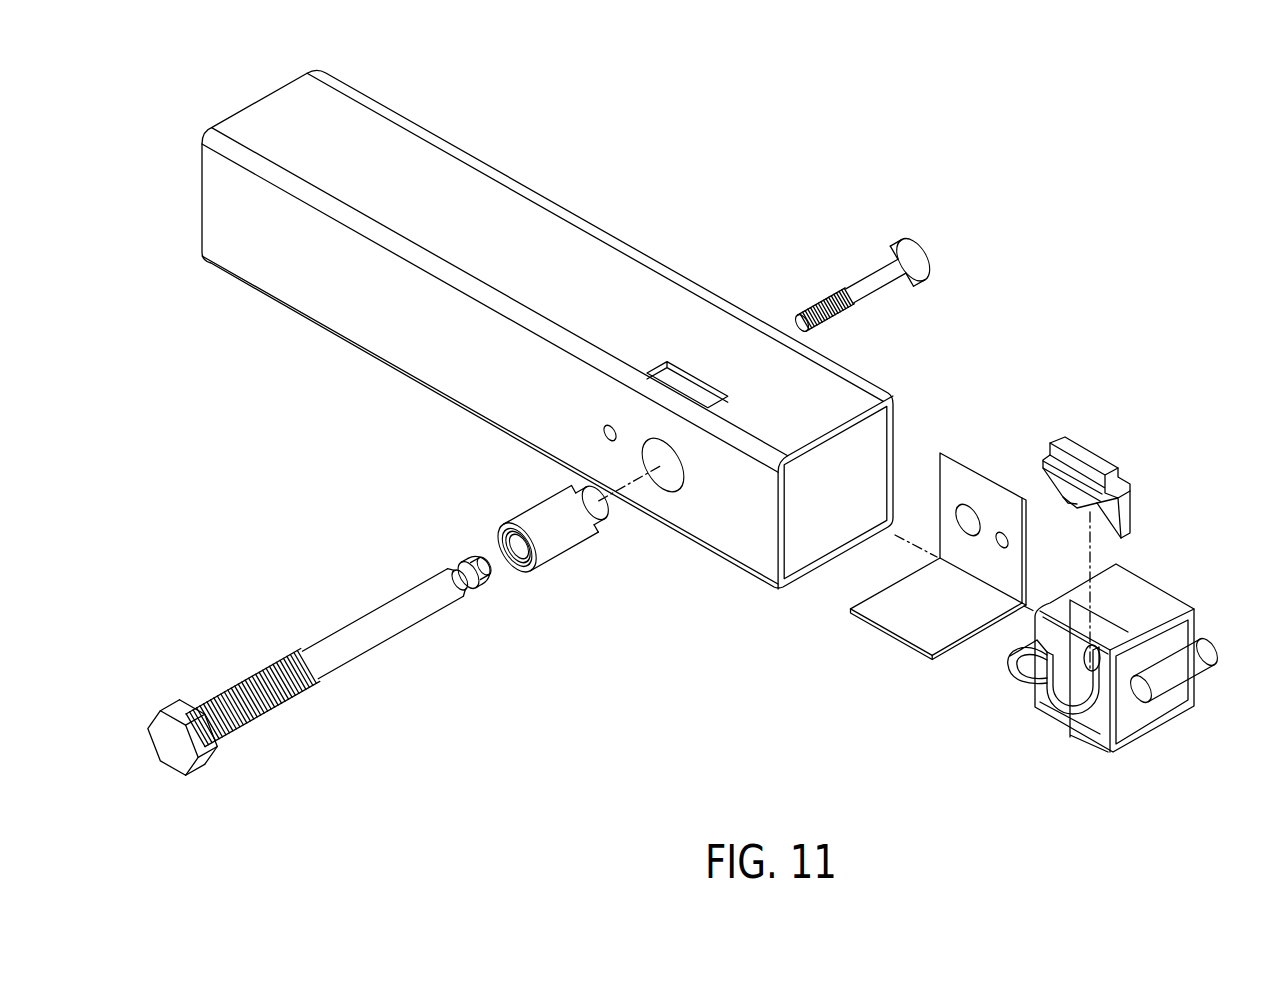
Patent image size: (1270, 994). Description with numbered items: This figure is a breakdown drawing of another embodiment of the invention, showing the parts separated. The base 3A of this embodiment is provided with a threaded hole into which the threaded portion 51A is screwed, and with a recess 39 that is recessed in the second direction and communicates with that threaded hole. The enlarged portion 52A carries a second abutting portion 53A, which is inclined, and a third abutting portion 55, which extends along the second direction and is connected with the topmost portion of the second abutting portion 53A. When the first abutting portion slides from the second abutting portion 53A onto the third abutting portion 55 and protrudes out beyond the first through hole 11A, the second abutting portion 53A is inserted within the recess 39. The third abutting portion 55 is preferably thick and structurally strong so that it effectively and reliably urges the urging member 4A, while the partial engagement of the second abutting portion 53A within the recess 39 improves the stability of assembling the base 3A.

The first through hole 11A is at (690, 362).
The urging member 4A is at (1128, 450).
The base 3A is at (1040, 748).
The recess 39 is at (1022, 693).
The threaded portion 51A is at (288, 707).
The enlarged portion 52A is at (463, 581).
The third abutting portion 55 is at (548, 547).
The second abutting portion 53A is at (597, 545).